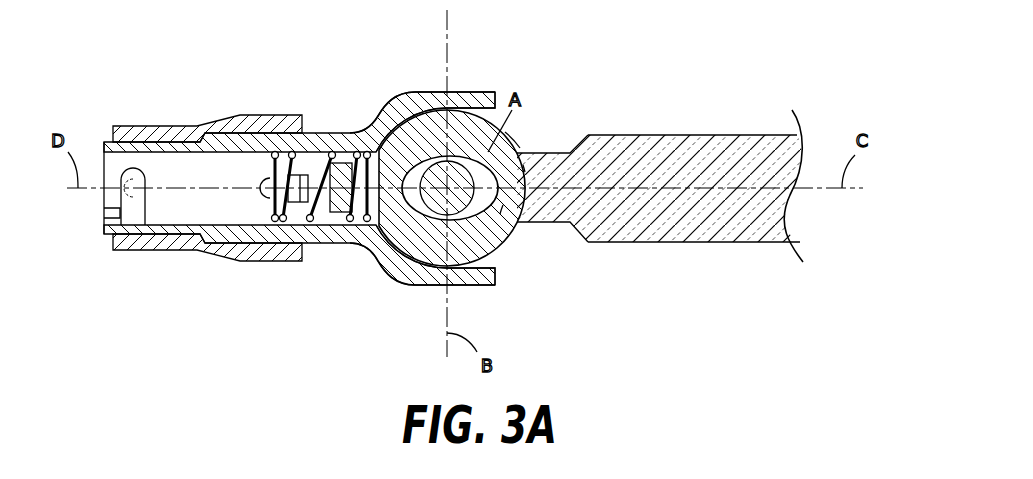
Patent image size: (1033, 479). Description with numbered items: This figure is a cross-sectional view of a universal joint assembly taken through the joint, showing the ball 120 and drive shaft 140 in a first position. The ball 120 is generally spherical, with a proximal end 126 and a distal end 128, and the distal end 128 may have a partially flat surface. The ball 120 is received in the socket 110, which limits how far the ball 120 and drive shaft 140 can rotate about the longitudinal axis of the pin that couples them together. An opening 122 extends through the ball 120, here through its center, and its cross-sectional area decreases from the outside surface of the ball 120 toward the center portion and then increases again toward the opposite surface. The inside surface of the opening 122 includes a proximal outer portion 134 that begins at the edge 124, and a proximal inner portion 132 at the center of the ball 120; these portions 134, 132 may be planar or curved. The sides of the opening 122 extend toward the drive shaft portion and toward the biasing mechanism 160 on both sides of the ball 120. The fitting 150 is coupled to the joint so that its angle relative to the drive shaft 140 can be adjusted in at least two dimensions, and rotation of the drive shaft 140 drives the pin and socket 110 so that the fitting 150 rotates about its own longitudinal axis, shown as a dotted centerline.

The socket 110 is at (470, 92).
The ball 120 is at (498, 240).
The opening 122 is at (437, 200).
The edge 124 is at (530, 220).
The proximal end 126 is at (527, 140).
The distal end 128 is at (384, 124).
The proximal inner portion 132 is at (498, 212).
The proximal outer portion 134 is at (528, 177).
The drive shaft 140 is at (710, 150).
The fitting 150 is at (165, 113).
The biasing mechanism 160 is at (328, 152).